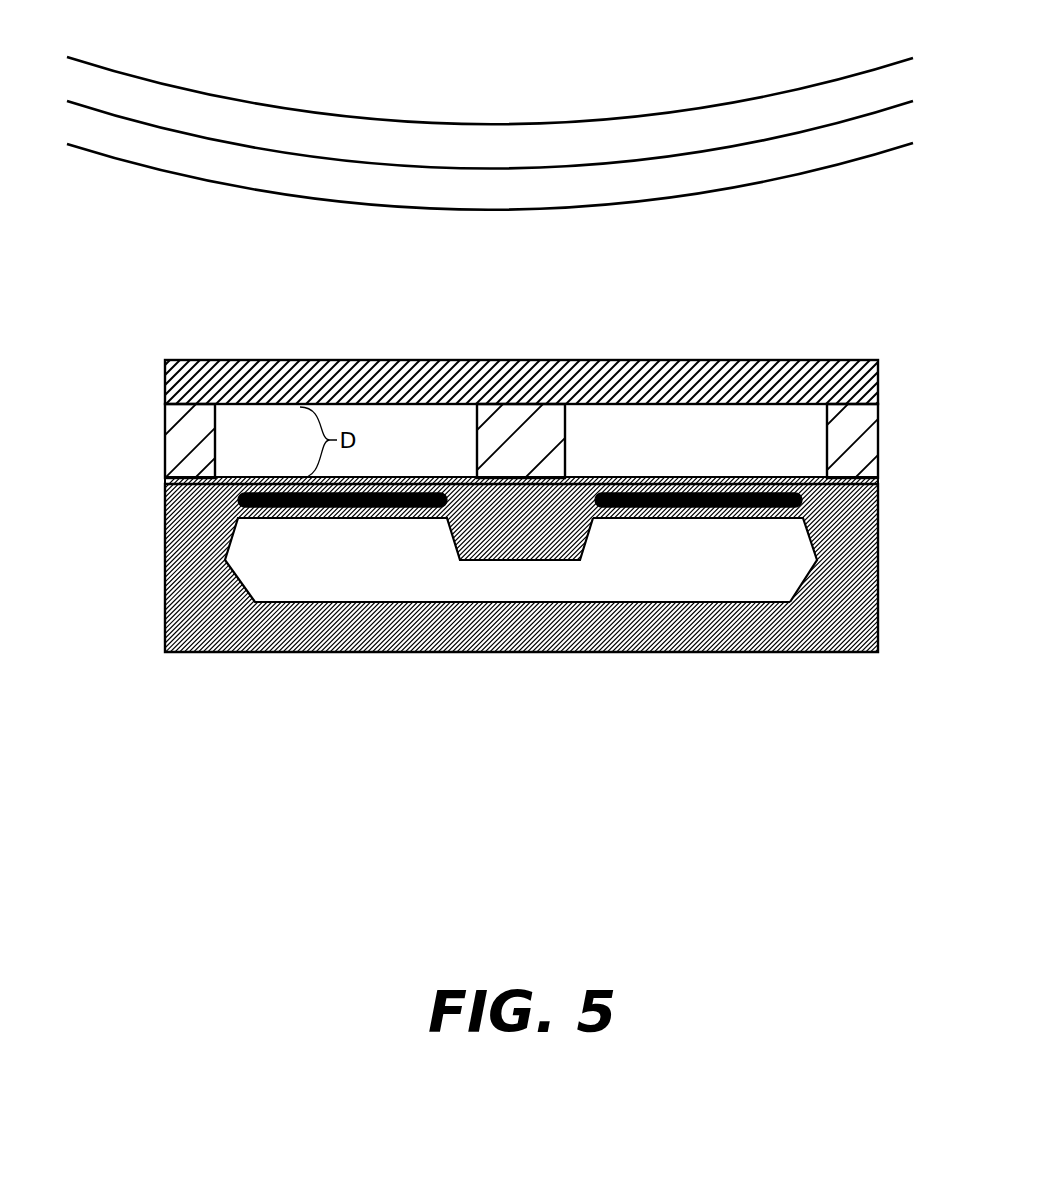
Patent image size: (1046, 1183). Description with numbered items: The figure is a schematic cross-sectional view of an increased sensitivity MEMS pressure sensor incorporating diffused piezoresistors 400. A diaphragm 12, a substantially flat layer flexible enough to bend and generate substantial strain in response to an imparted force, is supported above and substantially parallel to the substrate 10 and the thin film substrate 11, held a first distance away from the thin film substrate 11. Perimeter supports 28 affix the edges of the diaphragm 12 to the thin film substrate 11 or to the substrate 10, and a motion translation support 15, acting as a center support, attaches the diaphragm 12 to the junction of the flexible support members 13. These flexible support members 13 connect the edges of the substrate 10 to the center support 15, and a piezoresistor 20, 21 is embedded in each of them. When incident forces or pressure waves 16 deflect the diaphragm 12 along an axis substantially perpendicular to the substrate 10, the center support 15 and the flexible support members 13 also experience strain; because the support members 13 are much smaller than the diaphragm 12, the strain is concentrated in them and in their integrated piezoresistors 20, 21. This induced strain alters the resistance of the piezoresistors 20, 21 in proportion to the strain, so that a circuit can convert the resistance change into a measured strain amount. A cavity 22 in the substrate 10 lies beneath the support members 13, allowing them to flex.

The pressure waves 16 is at (338, 112).
The MEMS pressure sensor incorporating diffused piezoresistors 400 is at (840, 298).
The diaphragm 12 is at (375, 360).
The perimeter supports 28 is at (190, 433).
The motion translation support 15 is at (528, 456).
The thin film substrate 11 is at (165, 485).
The substrate 10 is at (165, 598).
The cavity 22 is at (360, 572).
The flexible support members 13 is at (708, 520).
The piezoresistor 21 is at (447, 497).
The piezoresistor 20 is at (802, 505).